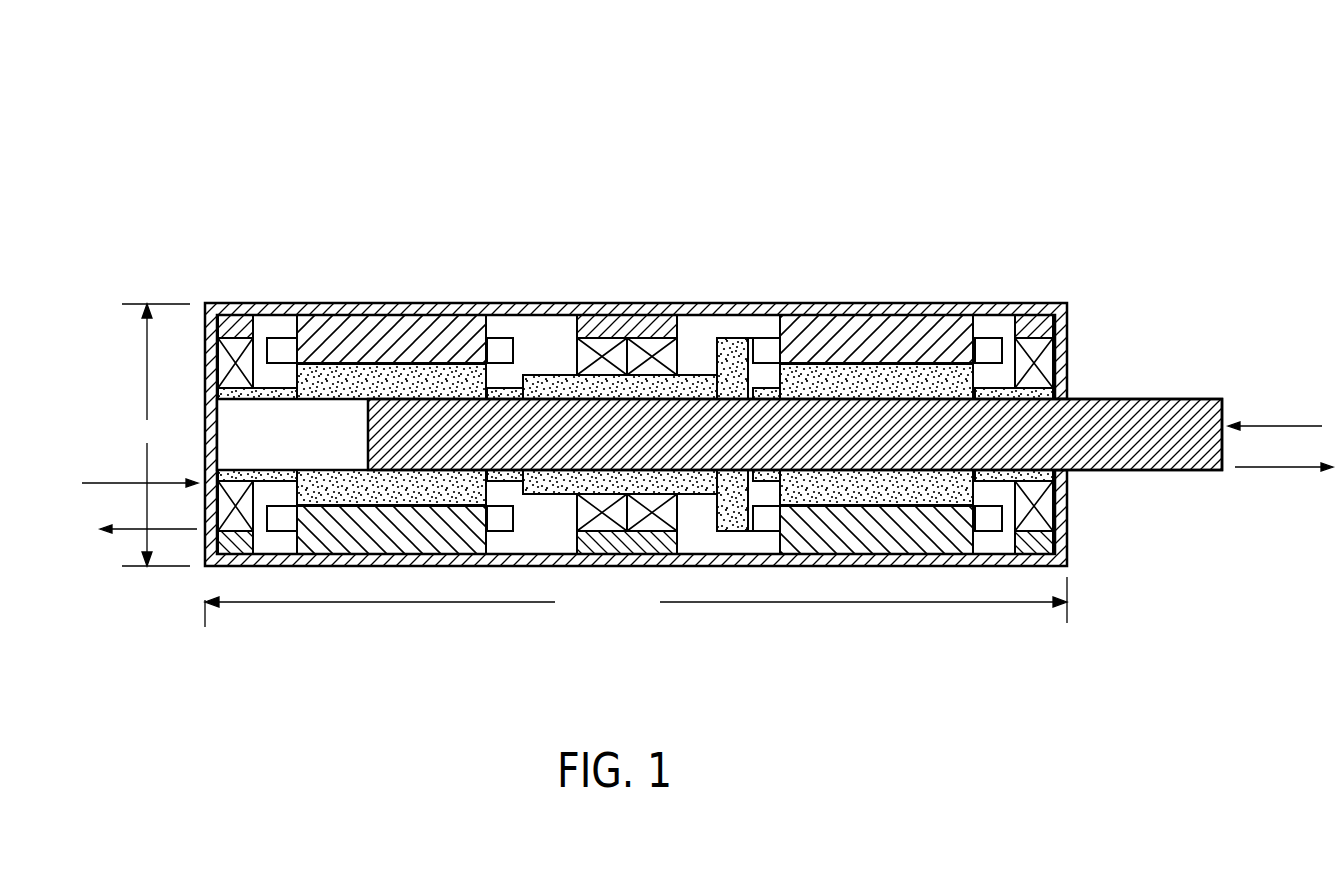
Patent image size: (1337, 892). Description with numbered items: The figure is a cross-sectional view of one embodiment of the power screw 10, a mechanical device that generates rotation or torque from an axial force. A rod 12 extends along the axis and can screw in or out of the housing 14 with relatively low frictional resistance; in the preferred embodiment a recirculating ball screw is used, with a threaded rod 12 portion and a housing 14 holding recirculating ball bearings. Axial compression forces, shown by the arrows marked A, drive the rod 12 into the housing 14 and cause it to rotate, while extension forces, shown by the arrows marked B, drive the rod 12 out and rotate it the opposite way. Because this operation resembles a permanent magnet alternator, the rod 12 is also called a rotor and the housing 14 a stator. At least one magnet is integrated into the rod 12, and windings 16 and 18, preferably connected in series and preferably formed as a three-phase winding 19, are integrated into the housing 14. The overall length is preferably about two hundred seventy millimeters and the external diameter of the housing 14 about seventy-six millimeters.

The power screw 10 is at (700, 425).
The rod 12 is at (1109, 470).
The housing 14 is at (417, 567).
The winding 16 is at (410, 304).
The winding 18 is at (864, 318).
The three-phase winding 19 is at (370, 322).